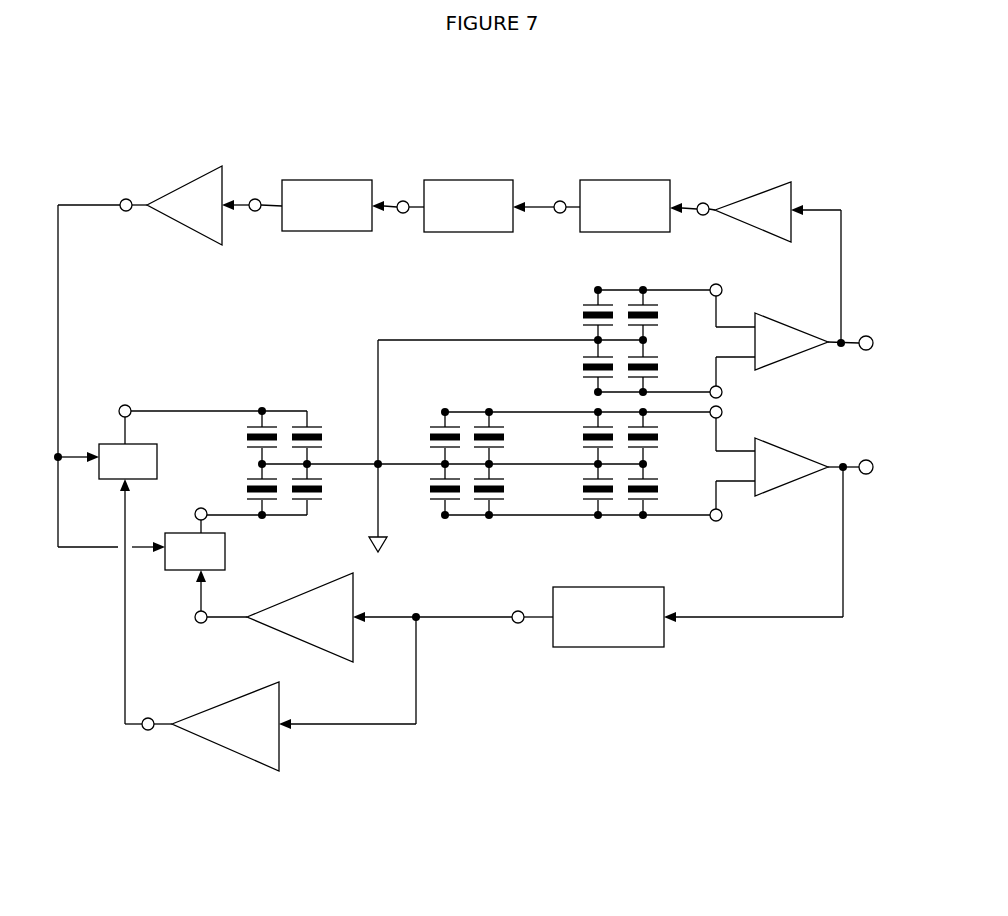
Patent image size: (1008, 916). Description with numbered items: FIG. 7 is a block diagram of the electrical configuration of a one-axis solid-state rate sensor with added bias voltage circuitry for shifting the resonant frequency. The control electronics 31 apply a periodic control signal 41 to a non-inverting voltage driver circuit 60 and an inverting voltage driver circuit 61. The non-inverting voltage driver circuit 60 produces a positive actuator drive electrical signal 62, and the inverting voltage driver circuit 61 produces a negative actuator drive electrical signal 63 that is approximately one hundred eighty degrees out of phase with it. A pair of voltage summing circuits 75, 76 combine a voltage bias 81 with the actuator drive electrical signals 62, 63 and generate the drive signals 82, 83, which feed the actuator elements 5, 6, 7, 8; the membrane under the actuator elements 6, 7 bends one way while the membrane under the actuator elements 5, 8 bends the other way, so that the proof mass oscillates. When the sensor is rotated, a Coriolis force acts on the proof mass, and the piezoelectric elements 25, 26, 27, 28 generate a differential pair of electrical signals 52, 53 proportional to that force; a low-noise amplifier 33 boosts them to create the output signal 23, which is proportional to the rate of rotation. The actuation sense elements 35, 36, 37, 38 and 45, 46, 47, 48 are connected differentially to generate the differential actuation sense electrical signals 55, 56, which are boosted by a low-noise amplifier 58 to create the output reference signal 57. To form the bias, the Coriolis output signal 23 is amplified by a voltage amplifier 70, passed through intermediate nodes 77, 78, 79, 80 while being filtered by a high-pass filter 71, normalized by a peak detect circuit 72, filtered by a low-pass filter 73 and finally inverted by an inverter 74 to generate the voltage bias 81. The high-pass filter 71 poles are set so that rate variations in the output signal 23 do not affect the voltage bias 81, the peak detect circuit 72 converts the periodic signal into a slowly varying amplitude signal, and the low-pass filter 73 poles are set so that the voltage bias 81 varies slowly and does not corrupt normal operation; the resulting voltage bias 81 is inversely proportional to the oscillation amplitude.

The actuator element 5 is at (250, 437).
The actuator element 6 is at (250, 489).
The actuator element 7 is at (322, 489).
The actuator element 8 is at (322, 437).
The output signal 23 is at (871, 338).
The piezoelectric element 25 is at (583, 314).
The piezoelectric element 26 is at (583, 367).
The piezoelectric element 27 is at (660, 366).
The piezoelectric element 28 is at (660, 316).
The control electronics 31 is at (605, 652).
The low-noise amplifier 33 is at (770, 326).
The actuation sense element 35 is at (430, 437).
The actuation sense element 36 is at (430, 490).
The actuation sense element 37 is at (583, 491).
The actuation sense element 38 is at (583, 439).
The periodic control signal 41 is at (515, 625).
The actuation sense element 45 is at (506, 490).
The actuation sense element 46 is at (506, 438).
The actuation sense element 47 is at (658, 438).
The actuation sense element 48 is at (658, 490).
The differential electrical signal 52 is at (722, 288).
The differential electrical signal 53 is at (722, 391).
The differential actuation sense electrical signal 55 is at (722, 411).
The differential actuation sense electrical signal 56 is at (722, 517).
The output reference signal 57 is at (871, 462).
The low-noise amplifier 58 is at (770, 452).
The non-inverting voltage driver circuit 60 is at (337, 602).
The inverting voltage driver circuit 61 is at (245, 745).
The positive actuator drive electrical signal 62 is at (196, 622).
The negative actuator drive electrical signal 63 is at (144, 731).
The voltage amplifier 70 is at (776, 188).
The high-pass filter 71 is at (622, 186).
The peak detect circuit 72 is at (458, 184).
The low-pass filter 73 is at (322, 186).
The inverter 74 is at (192, 183).
The voltage summing circuit 75 is at (111, 445).
The voltage summing circuit 76 is at (169, 572).
The node 77 is at (701, 203).
The node 78 is at (557, 200).
The node 79 is at (402, 200).
The node 80 is at (251, 199).
The voltage bias 81 is at (129, 212).
The drive signal 82 is at (200, 507).
The drive signal 83 is at (130, 406).